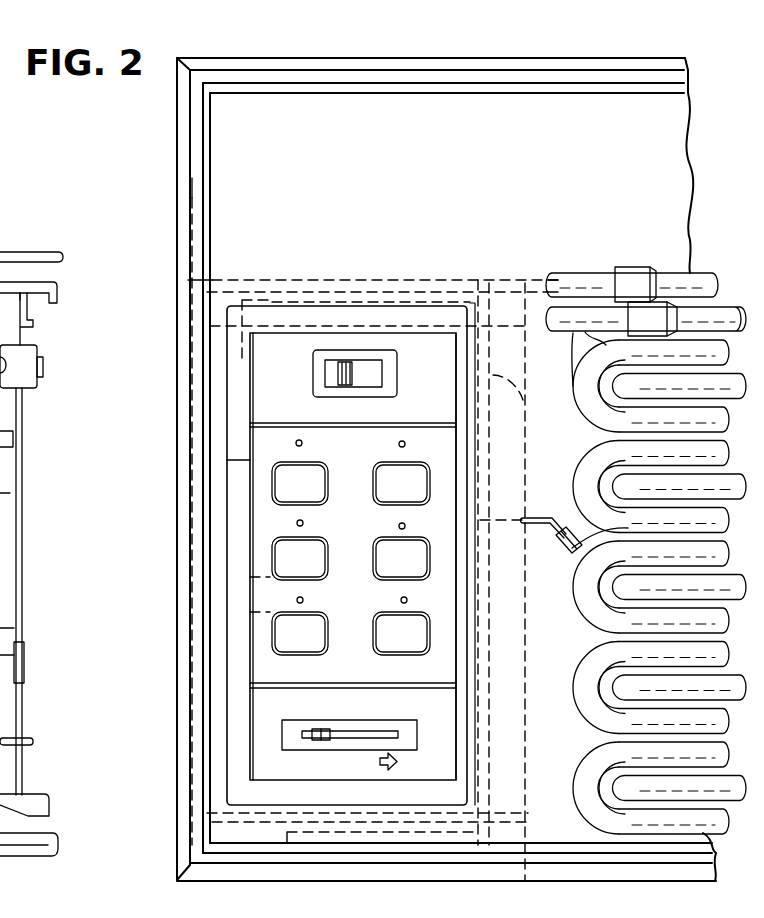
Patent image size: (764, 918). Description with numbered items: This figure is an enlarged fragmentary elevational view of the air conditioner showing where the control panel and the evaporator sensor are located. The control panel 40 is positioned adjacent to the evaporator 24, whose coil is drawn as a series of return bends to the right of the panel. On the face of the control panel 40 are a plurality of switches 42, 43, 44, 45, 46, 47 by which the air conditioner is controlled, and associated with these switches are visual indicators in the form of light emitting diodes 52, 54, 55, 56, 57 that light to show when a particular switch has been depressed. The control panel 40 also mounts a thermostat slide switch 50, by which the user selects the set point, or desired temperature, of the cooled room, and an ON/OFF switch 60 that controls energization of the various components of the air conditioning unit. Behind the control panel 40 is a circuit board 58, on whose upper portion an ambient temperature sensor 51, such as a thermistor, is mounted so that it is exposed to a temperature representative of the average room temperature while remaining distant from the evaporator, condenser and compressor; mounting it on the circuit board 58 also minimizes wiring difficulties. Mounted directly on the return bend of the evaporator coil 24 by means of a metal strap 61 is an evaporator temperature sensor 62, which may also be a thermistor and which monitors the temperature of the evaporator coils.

The evaporator 24 is at (725, 352).
The control panel 40 is at (280, 345).
The switch 42 is at (313, 472).
The switch 43 is at (418, 472).
The switch 44 is at (318, 556).
The switch 45 is at (437, 528).
The switch 46 is at (306, 652).
The switch 47 is at (410, 650).
The thermostat slide switch 50 is at (316, 737).
The ambient temperature sensor 51 is at (0, 414).
The light emitting diode 52 is at (310, 405).
The light emitting diode 54 is at (303, 521).
The light emitting diode 55 is at (402, 523).
The light emitting diode 56 is at (302, 597).
The light emitting diode 57 is at (406, 597).
The circuit board 58 is at (0, 494).
The ON/OFF switch 60 is at (38, 387).
The metal strap 61 is at (584, 511).
The evaporator temperature sensor 62 is at (580, 562).